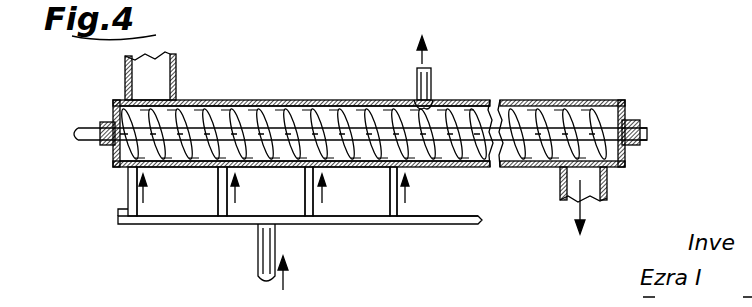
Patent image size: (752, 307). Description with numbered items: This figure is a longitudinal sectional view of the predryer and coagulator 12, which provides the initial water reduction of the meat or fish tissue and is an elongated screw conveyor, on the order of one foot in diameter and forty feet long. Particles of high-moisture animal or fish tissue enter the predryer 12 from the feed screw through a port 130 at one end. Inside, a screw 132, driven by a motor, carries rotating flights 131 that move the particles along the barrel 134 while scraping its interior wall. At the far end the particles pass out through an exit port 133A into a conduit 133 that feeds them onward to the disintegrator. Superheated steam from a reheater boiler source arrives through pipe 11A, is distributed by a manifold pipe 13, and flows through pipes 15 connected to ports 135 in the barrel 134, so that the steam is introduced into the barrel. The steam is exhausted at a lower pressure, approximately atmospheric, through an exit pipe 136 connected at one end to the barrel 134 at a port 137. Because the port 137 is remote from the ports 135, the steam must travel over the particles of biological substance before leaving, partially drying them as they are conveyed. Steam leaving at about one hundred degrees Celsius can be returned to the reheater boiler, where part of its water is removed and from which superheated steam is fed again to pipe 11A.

The predryer and coagulator 12 is at (297, 100).
The manifold pipe 13 is at (442, 218).
The pipes 15 is at (218, 197).
The pipe 11A is at (273, 250).
The port 130 is at (168, 92).
The flights 131 is at (560, 98).
The screw 132 is at (86, 127).
The conduit 133 is at (600, 190).
The exit port 133A is at (630, 146).
The barrel 134 is at (232, 99).
The ports 135 is at (115, 158).
The exit pipe 136 is at (432, 82).
The port 137 is at (414, 98).